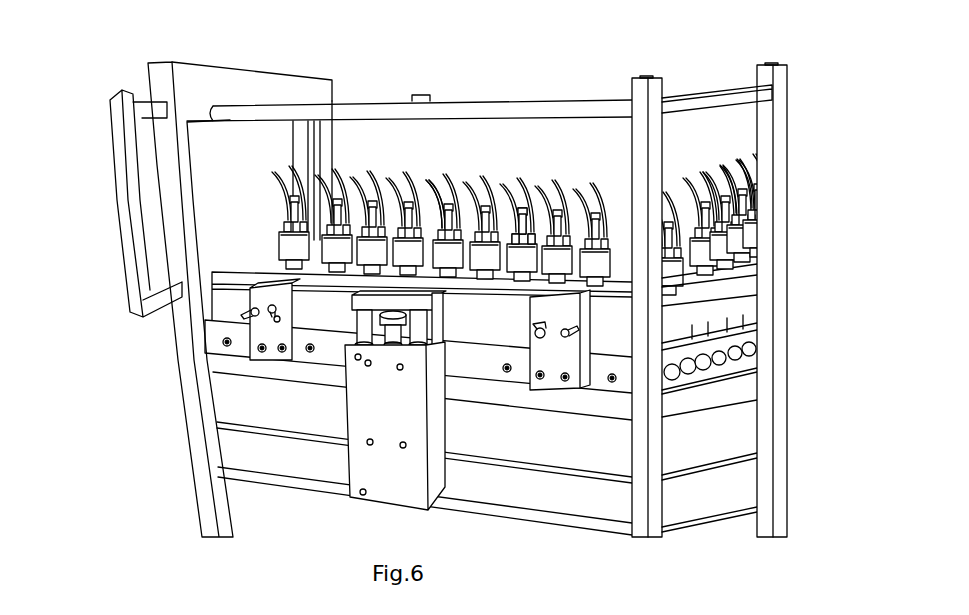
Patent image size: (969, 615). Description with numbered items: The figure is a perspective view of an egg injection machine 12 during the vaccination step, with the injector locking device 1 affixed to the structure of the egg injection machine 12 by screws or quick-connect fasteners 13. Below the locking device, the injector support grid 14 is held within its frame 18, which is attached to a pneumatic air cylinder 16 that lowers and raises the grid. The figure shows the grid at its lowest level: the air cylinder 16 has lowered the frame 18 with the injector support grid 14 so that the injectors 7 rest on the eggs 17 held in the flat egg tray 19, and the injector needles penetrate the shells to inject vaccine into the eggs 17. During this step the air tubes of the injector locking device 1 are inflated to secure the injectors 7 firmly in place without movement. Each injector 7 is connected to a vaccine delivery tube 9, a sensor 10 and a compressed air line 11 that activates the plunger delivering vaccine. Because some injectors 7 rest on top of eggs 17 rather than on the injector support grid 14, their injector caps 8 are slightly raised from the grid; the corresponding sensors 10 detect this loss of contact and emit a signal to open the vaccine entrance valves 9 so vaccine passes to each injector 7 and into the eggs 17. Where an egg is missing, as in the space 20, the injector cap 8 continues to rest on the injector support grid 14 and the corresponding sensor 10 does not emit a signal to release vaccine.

The injector locking device 1 is at (720, 283).
The injector 7 is at (750, 255).
The injector cap 8 is at (293, 242).
The vaccine delivery tube 9 is at (518, 205).
The sensor 10 is at (535, 215).
The compressed air line 11 is at (452, 192).
The egg injection machine 12 is at (780, 90).
The fastener 13 is at (253, 313).
The injector support grid 14 is at (282, 267).
The pneumatic air cylinder 16 is at (375, 405).
The egg 17 is at (748, 350).
The frame 18 is at (263, 270).
The egg tray 19 is at (687, 373).
The space 20 is at (680, 376).